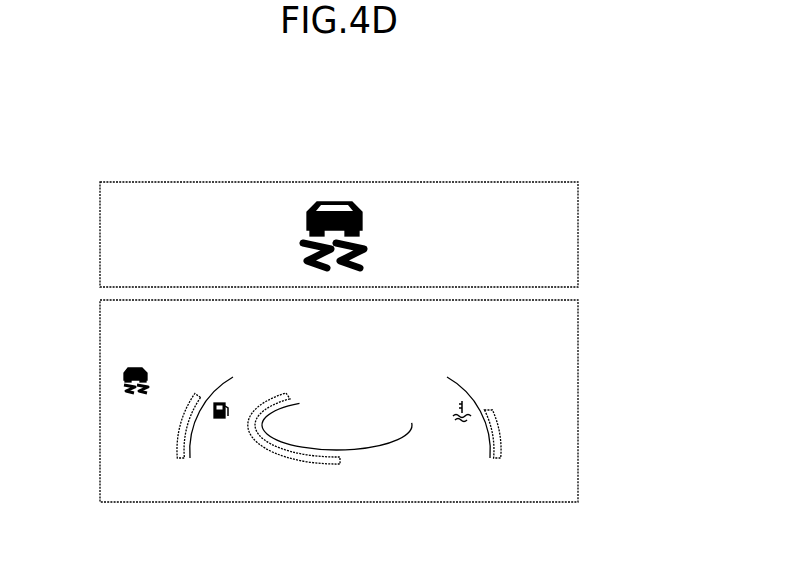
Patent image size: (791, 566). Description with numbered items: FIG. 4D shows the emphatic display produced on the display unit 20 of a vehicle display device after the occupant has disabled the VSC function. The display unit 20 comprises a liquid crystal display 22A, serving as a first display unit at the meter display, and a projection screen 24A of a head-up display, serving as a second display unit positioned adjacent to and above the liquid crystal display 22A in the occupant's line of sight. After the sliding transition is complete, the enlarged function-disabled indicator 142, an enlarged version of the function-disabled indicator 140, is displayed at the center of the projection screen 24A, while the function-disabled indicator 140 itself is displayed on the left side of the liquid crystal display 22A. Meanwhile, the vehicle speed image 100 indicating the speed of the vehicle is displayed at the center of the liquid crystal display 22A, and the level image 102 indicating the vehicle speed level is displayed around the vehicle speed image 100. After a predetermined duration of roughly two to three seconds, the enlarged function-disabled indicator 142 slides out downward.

The display unit 20 is at (627, 202).
The projection screen 24A is at (578, 247).
The liquid crystal display 22A is at (578, 417).
The enlarged function-disabled indicator 142 is at (318, 207).
The function-disabled indicator 140 is at (123, 372).
The vehicle speed image 100 is at (313, 362).
The level image 102 is at (271, 448).